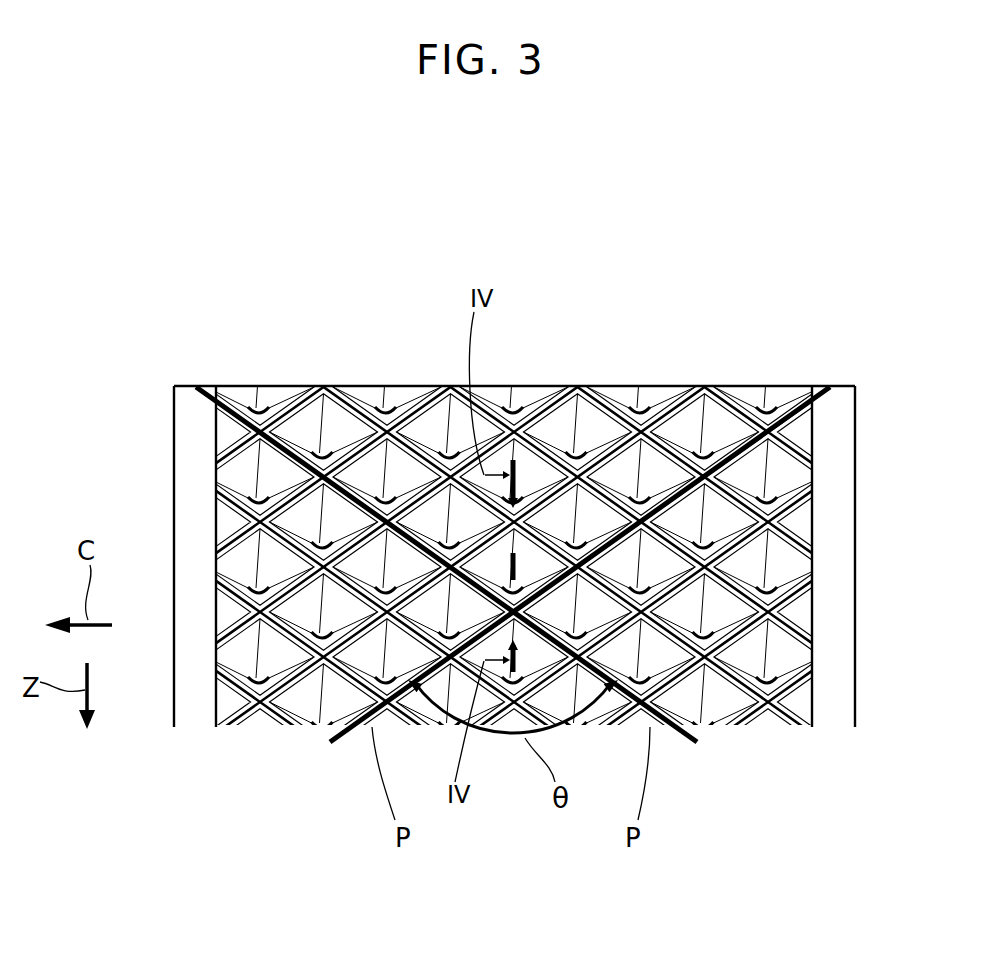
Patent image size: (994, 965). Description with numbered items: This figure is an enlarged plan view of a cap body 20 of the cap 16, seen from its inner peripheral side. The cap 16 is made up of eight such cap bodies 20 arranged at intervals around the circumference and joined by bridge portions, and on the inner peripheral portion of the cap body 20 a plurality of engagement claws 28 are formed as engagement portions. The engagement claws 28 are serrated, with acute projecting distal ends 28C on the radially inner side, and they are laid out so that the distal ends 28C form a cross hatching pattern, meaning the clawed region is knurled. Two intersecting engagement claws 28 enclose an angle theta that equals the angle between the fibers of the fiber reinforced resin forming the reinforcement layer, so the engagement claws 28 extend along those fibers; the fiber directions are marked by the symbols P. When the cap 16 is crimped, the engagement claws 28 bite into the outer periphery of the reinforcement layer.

The cap body 20 is at (327, 830).
The cap 16 is at (514, 671).
The engagement claw 28 is at (320, 503).
The distal end 28C is at (384, 406).